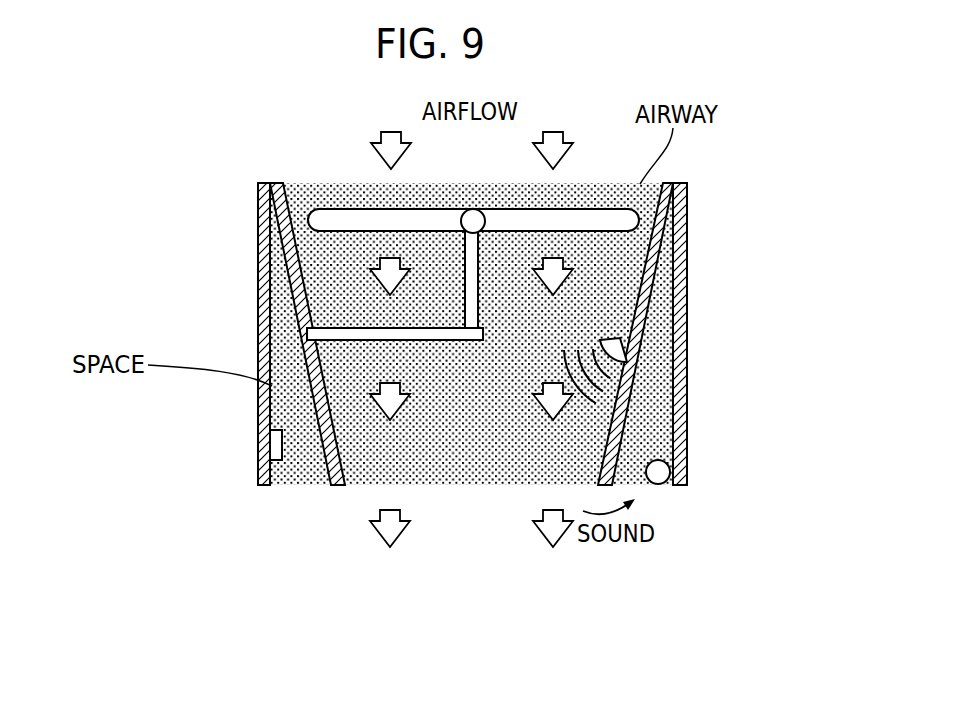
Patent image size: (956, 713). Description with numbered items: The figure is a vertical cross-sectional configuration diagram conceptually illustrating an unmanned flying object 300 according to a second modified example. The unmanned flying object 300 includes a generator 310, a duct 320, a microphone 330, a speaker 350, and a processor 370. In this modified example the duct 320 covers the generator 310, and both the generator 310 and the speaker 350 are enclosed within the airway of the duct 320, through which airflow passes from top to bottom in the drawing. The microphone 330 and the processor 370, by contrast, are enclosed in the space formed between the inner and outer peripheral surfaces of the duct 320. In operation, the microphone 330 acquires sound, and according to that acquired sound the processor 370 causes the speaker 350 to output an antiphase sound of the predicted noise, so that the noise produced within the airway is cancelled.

The unmanned flying object 300 is at (451, 247).
The generator 310 is at (336, 209).
The duct 320 is at (262, 236).
The microphone 330 is at (659, 484).
The speaker 350 is at (624, 344).
The processor 370 is at (274, 461).